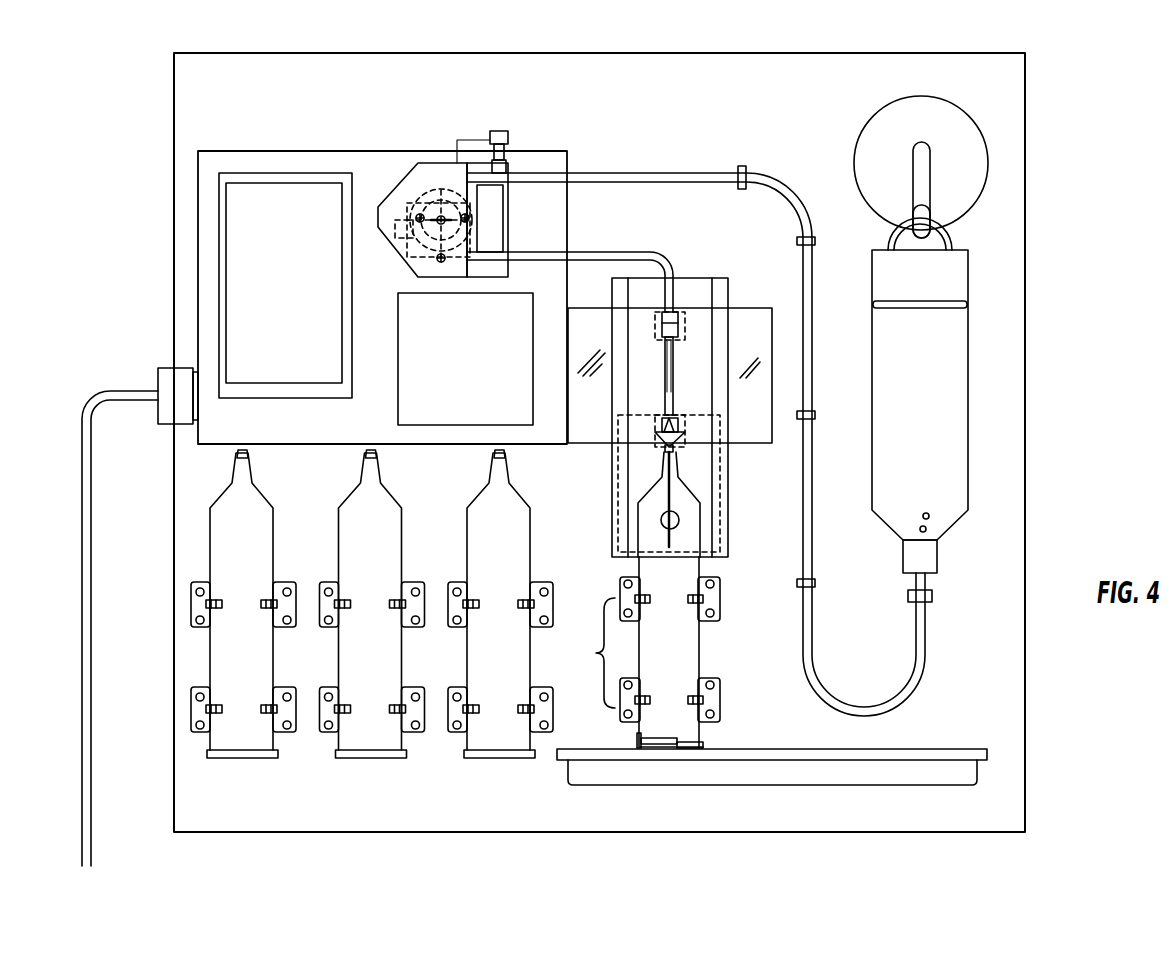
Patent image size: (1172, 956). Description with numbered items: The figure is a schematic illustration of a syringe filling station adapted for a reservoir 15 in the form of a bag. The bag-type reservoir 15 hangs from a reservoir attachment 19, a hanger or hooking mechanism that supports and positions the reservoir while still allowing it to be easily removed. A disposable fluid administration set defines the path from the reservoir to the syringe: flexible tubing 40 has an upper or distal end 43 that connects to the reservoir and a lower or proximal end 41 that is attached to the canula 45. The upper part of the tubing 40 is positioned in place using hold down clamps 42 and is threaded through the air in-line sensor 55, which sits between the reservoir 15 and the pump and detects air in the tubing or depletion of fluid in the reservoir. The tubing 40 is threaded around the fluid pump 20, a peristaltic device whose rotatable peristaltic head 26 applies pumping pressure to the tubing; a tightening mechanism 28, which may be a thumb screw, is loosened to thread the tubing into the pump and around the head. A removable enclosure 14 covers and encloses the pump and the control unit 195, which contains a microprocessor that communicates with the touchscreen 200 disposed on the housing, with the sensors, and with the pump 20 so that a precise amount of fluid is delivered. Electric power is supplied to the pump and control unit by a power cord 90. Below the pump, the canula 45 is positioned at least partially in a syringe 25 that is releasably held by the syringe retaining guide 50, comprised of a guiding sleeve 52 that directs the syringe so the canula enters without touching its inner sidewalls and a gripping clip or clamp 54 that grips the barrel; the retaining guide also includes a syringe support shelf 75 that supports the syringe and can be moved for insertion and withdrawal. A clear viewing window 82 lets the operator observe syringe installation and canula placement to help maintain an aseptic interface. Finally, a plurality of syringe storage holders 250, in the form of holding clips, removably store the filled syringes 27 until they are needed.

The removable enclosure 14 is at (372, 178).
The reservoir 15 is at (926, 365).
The reservoir attachment 19 is at (980, 193).
The fluid pump 20 is at (418, 168).
The syringe 25 is at (680, 628).
The peristaltic head 26 is at (472, 228).
The filled syringes 27 is at (212, 519).
The tightening mechanism 28 is at (500, 130).
The flexible tubing 40 is at (622, 252).
The proximal end of the tubing 41 is at (675, 407).
The hold down clamps 42 is at (748, 170).
The distal end of the tubing 43 is at (928, 578).
The canula 45 is at (672, 511).
The syringe retaining guide 50 is at (681, 645).
The guiding sleeve 52 is at (718, 600).
The gripping clip 54 is at (718, 705).
The air in-line sensor 55 is at (940, 604).
The syringe support shelf 75 is at (565, 768).
The viewing window 82 is at (695, 477).
The electric power cord 90 is at (142, 390).
The control unit 195 is at (478, 395).
The touchscreen 200 is at (235, 322).
The syringe storage holders 250 is at (189, 615).